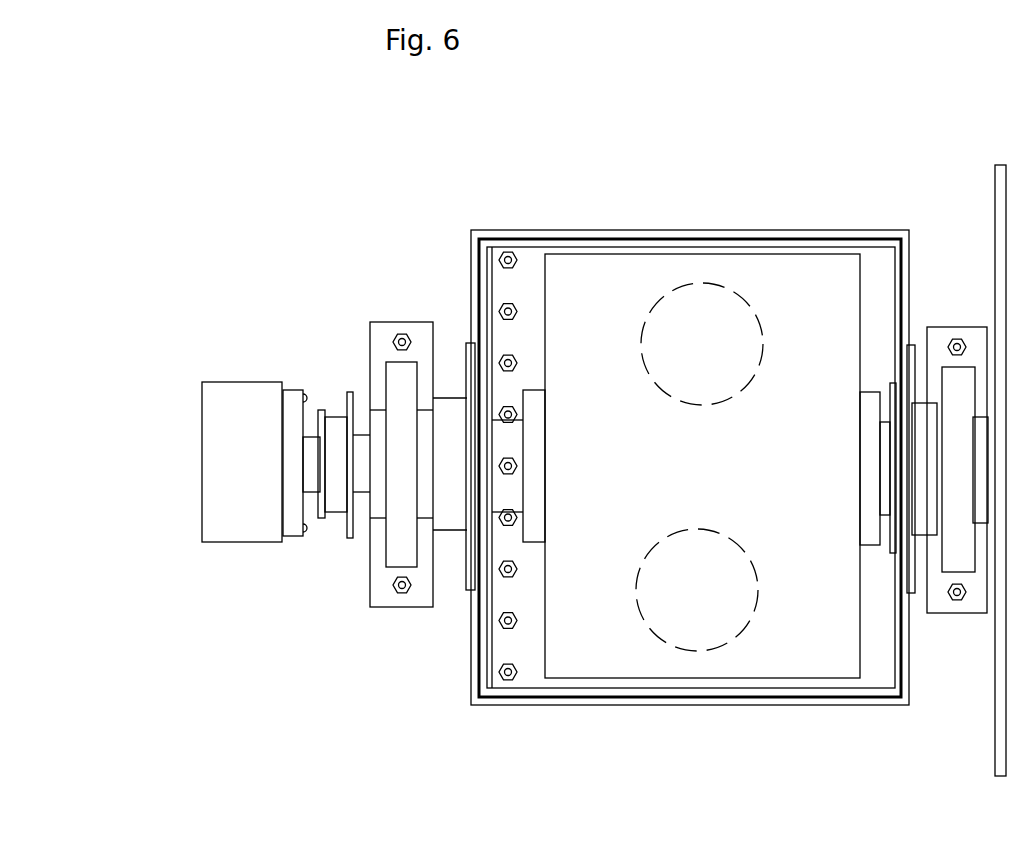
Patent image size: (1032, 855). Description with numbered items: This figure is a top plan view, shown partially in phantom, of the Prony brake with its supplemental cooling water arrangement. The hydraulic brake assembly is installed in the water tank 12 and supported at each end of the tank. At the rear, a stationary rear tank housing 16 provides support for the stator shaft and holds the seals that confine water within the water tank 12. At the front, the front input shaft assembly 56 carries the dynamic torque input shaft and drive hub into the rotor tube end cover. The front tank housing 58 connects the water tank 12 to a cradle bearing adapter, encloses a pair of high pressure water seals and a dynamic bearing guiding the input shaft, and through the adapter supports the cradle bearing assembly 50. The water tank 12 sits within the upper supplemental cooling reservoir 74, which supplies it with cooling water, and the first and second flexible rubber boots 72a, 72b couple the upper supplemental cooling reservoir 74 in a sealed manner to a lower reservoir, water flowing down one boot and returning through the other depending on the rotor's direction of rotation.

The water tank 12 is at (545, 285).
The rear tank housing 16 is at (950, 327).
The cradle bearing assembly 50 is at (382, 333).
The front input shaft assembly 56 is at (221, 364).
The front tank housing 58 is at (538, 402).
The first flexible rubber boot 72a is at (705, 283).
The second flexible rubber boot 72b is at (670, 644).
The upper supplemental cooling reservoir 74 is at (603, 238).